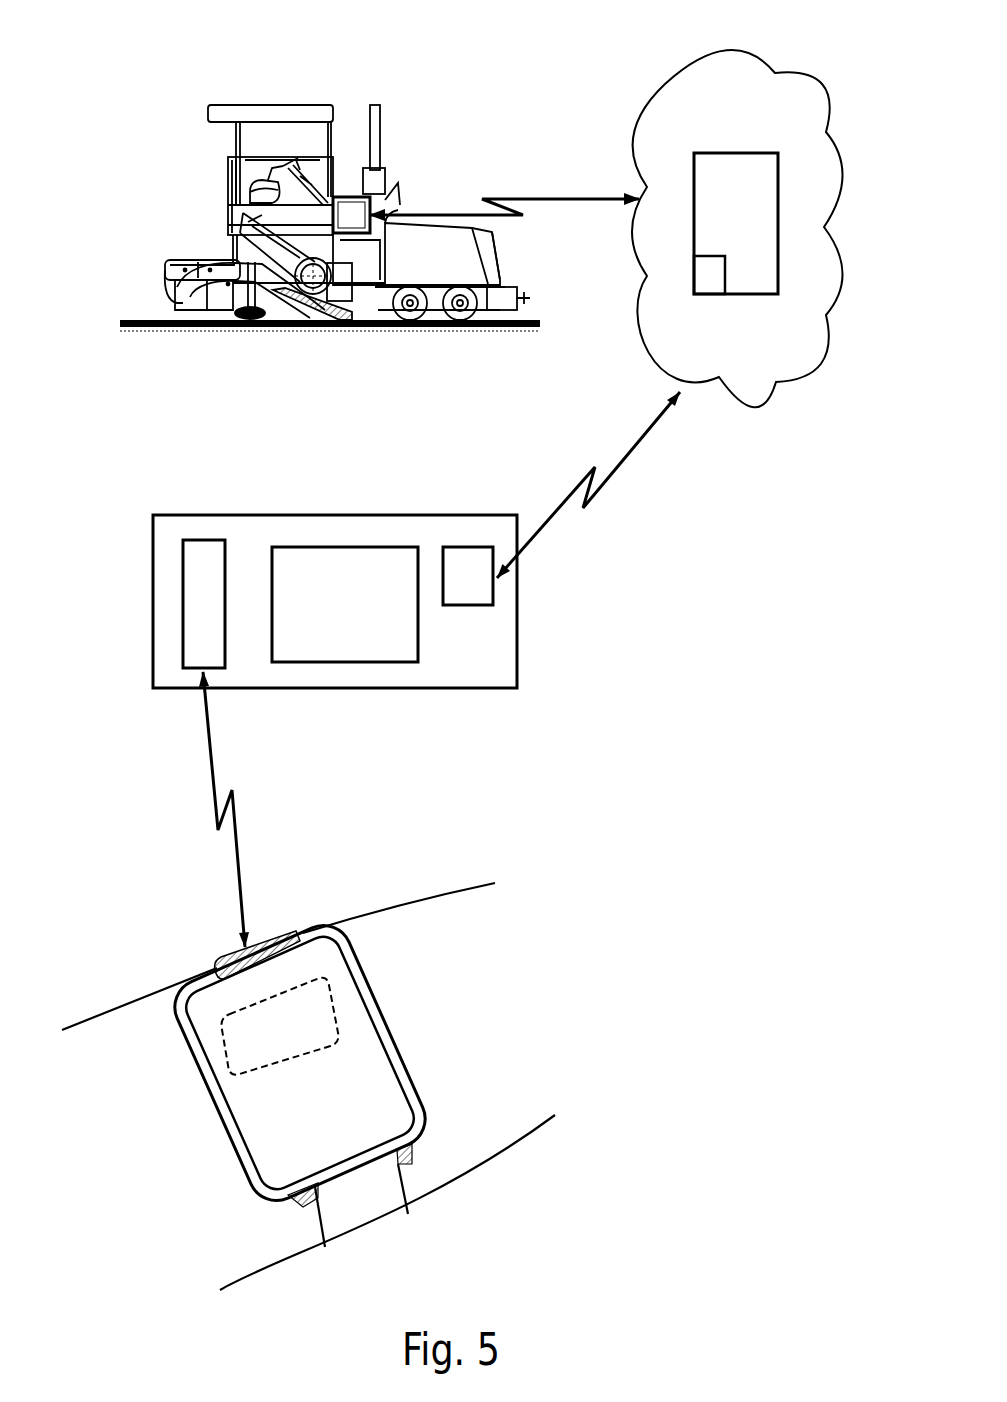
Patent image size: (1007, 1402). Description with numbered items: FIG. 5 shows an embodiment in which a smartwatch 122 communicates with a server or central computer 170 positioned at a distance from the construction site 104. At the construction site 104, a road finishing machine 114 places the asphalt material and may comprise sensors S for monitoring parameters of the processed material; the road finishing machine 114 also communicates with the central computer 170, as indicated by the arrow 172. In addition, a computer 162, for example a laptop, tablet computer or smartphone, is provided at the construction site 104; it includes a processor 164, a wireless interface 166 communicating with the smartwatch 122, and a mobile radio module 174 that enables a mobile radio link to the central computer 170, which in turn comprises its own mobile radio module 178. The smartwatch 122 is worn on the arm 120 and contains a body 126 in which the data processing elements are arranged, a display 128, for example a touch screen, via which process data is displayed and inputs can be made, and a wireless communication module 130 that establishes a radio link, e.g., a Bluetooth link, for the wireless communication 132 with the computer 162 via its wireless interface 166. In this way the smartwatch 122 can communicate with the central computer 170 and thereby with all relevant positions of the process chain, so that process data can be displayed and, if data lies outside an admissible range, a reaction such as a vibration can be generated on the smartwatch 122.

The construction site 104 is at (326, 86).
The road finishing machine 114 is at (433, 237).
The arrow 172 is at (564, 197).
The central computer 170 is at (759, 296).
The mobile radio module 178 is at (706, 296).
The computer 162 is at (520, 658).
The wireless interface 166 is at (195, 577).
The processor 164 is at (353, 560).
The mobile radio module 174 is at (467, 560).
The wireless communication 132 is at (238, 862).
The arm of operator 120 is at (511, 1140).
The smartwatch 122 is at (170, 1009).
The wireless communication module 130 is at (226, 962).
The body 126 is at (390, 1047).
The display 128 is at (348, 1123).